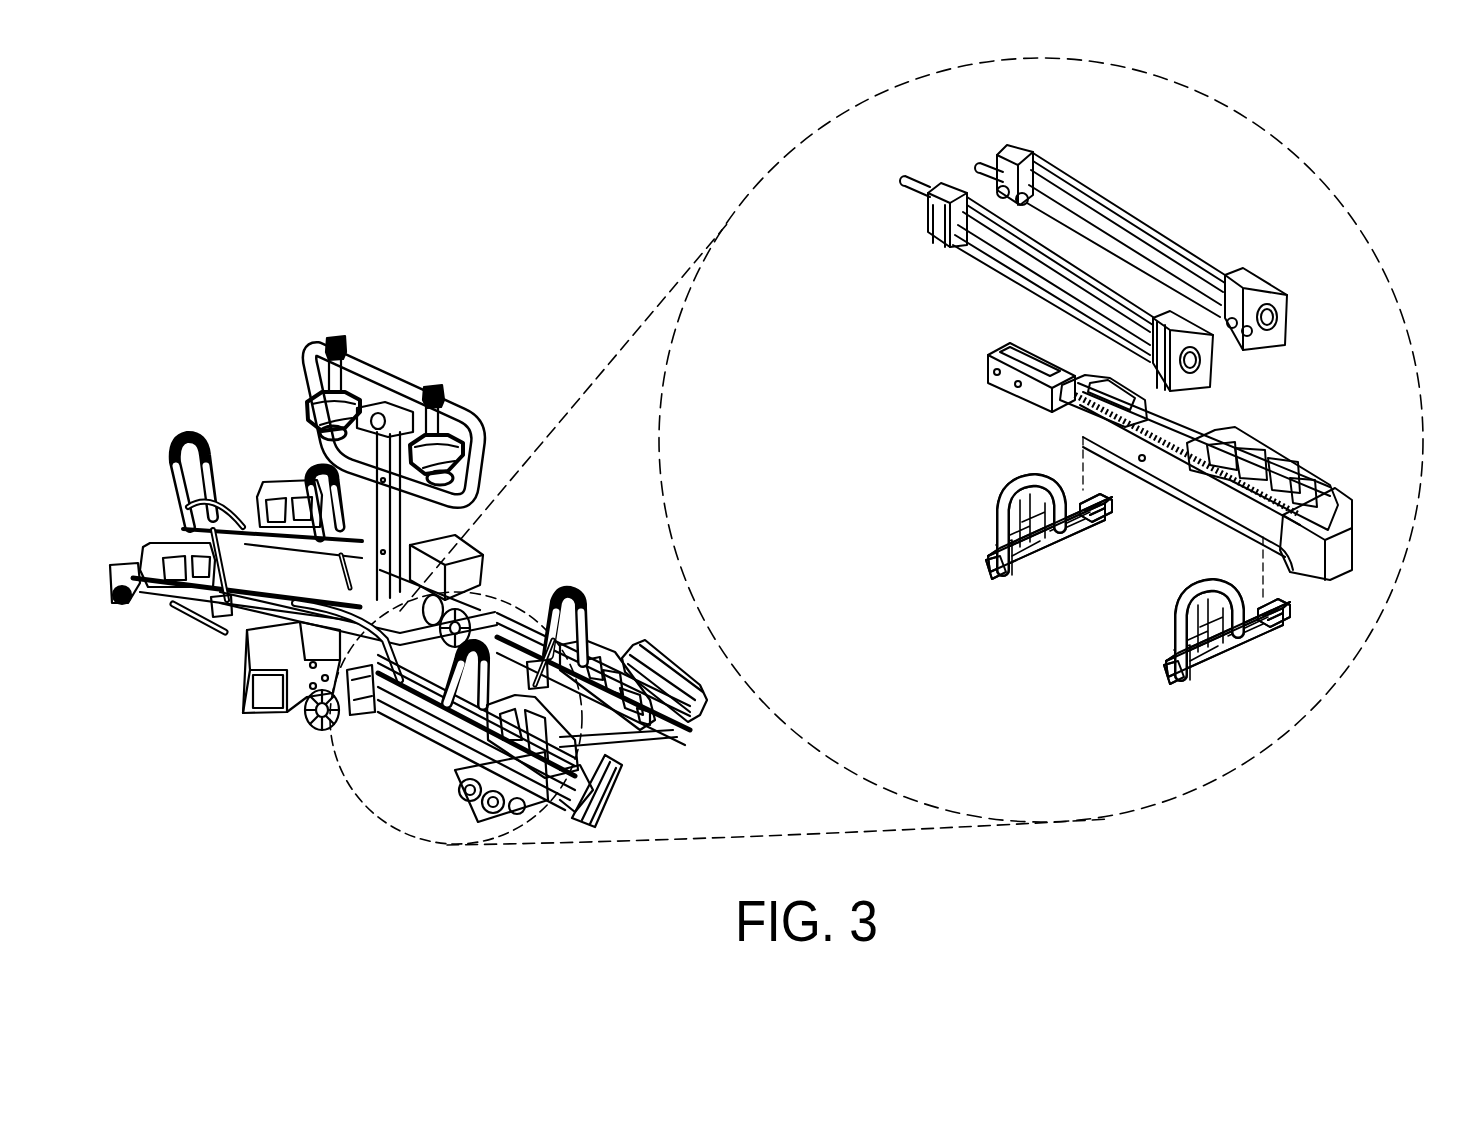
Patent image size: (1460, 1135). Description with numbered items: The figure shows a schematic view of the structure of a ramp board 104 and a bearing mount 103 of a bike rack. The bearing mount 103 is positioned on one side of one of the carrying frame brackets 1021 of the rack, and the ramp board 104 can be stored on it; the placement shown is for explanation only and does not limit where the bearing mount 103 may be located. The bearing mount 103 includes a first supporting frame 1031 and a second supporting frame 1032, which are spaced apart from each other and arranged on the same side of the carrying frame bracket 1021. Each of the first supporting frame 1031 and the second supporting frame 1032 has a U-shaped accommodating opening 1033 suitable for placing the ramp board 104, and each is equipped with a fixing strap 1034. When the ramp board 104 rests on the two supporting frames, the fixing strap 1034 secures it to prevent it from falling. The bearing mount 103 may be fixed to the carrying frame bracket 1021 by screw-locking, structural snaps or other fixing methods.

The bearing mount 103 is at (1105, 635).
The ramp board 104 is at (935, 143).
The carrying frame bracket 1021 is at (1000, 378).
The first supporting frame 1031 is at (1208, 636).
The second supporting frame 1032 is at (1007, 567).
The U-shaped accommodating opening 1033 is at (1027, 530).
The fixing strap 1034 is at (1020, 483).